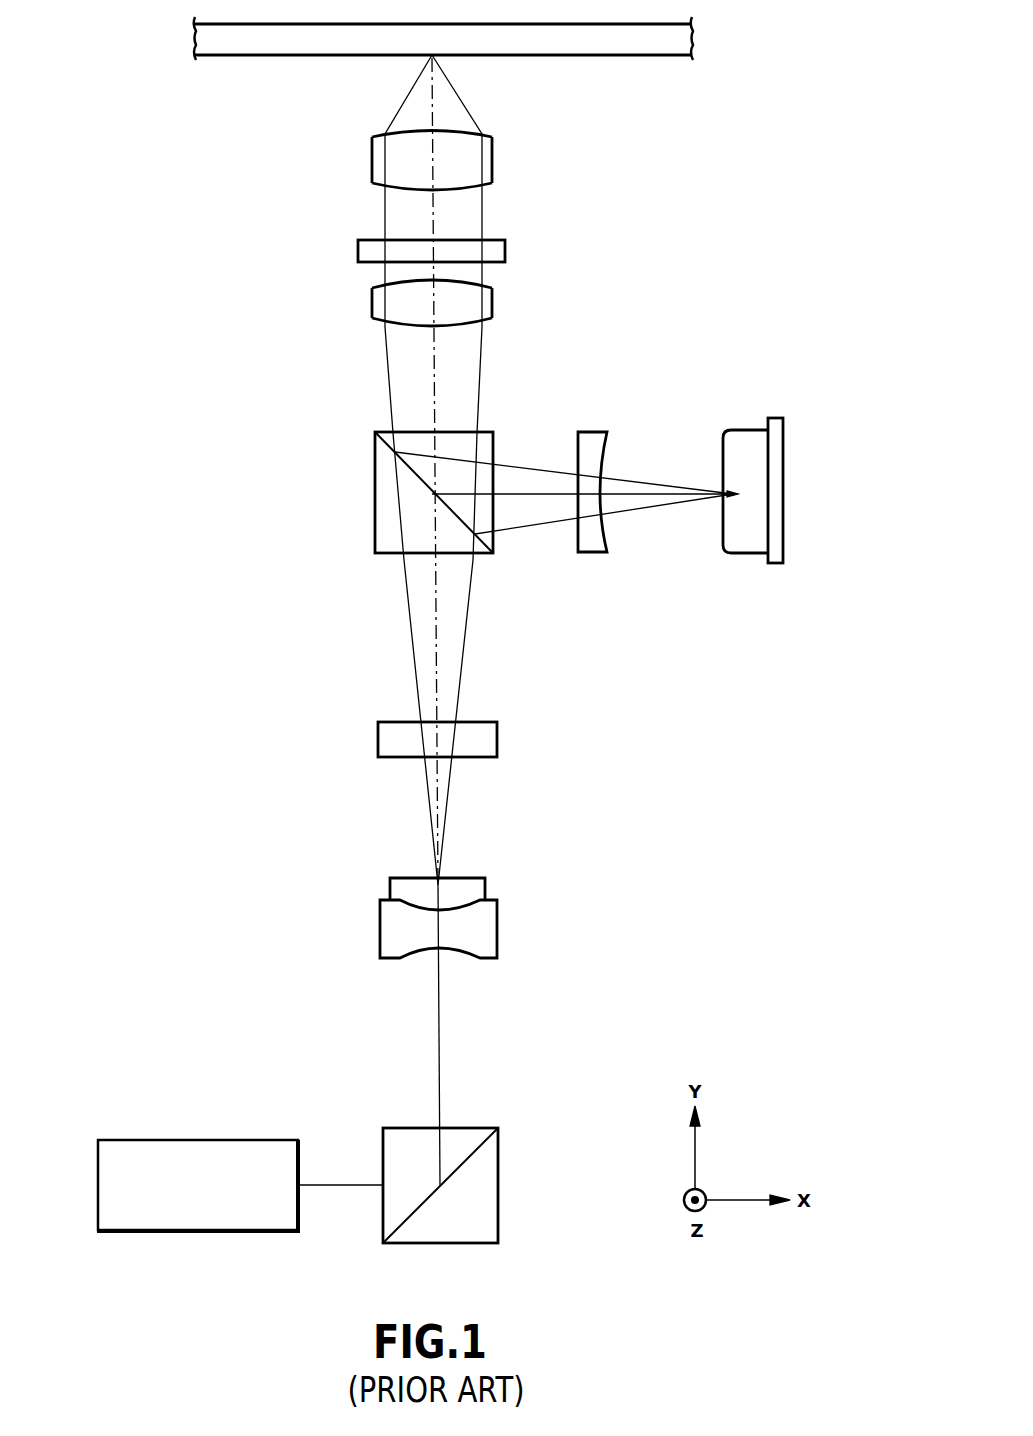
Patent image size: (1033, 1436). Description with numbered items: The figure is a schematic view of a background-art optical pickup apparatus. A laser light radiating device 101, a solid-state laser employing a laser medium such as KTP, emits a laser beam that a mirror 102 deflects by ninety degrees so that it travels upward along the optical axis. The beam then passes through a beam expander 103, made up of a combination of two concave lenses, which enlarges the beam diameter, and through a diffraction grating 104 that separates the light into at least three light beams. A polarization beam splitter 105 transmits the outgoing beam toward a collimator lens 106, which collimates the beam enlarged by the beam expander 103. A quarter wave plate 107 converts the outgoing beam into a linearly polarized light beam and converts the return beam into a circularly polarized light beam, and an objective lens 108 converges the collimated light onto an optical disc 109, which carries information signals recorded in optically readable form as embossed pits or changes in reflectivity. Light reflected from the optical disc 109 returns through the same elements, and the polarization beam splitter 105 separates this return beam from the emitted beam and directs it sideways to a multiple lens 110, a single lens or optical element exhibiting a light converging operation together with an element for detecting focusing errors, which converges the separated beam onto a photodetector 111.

The laser light radiating device 101 is at (270, 1140).
The mirror 102 is at (483, 1178).
The beam expander 103 is at (483, 930).
The diffraction grating 104 is at (487, 737).
The polarization beam splitter 105 is at (487, 440).
The collimator lens 106 is at (487, 303).
The quarter wave plate 107 is at (497, 250).
The objective lens 108 is at (485, 160).
The optical disc 109 is at (647, 43).
The multiple lens 110 is at (593, 438).
The photodetector 111 is at (745, 438).